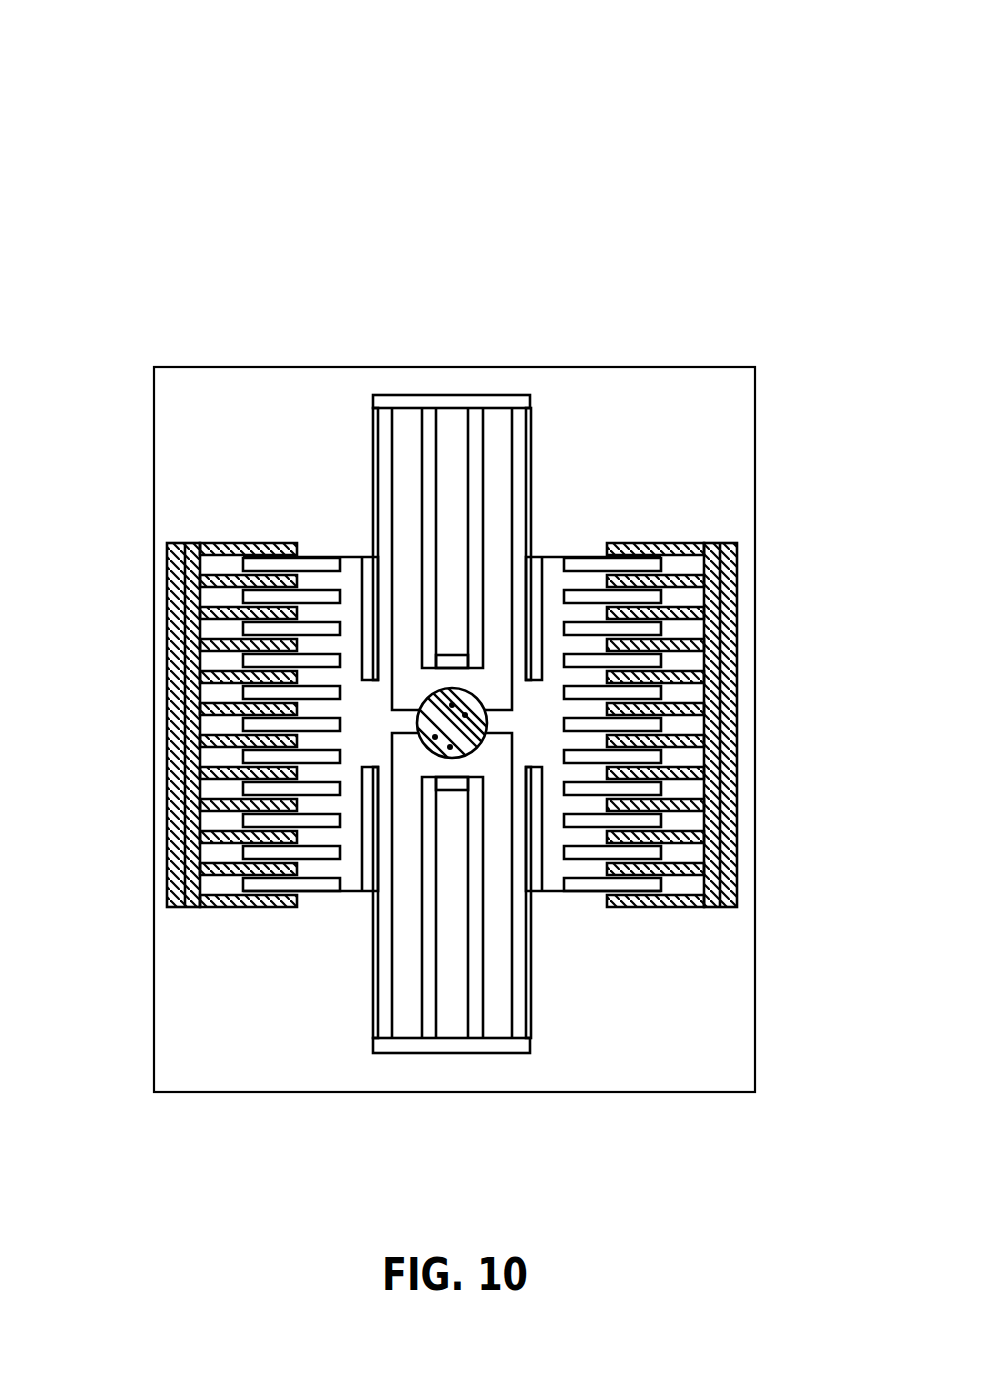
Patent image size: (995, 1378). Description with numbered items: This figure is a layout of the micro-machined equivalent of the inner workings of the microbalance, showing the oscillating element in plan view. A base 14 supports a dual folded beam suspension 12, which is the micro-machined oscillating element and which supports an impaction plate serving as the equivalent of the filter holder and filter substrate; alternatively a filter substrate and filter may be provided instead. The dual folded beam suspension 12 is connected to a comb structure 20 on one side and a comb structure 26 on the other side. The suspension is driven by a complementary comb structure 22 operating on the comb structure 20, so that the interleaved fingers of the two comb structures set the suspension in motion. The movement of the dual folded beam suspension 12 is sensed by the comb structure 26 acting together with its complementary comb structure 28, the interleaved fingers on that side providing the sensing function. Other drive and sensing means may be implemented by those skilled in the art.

The dual folded beam suspension 12 is at (399, 707).
The base 14 is at (394, 591).
The comb structure 20 is at (198, 582).
The complementary comb structure 22 is at (179, 635).
The comb structure 26 is at (706, 568).
The complementary comb structure 28 is at (737, 630).